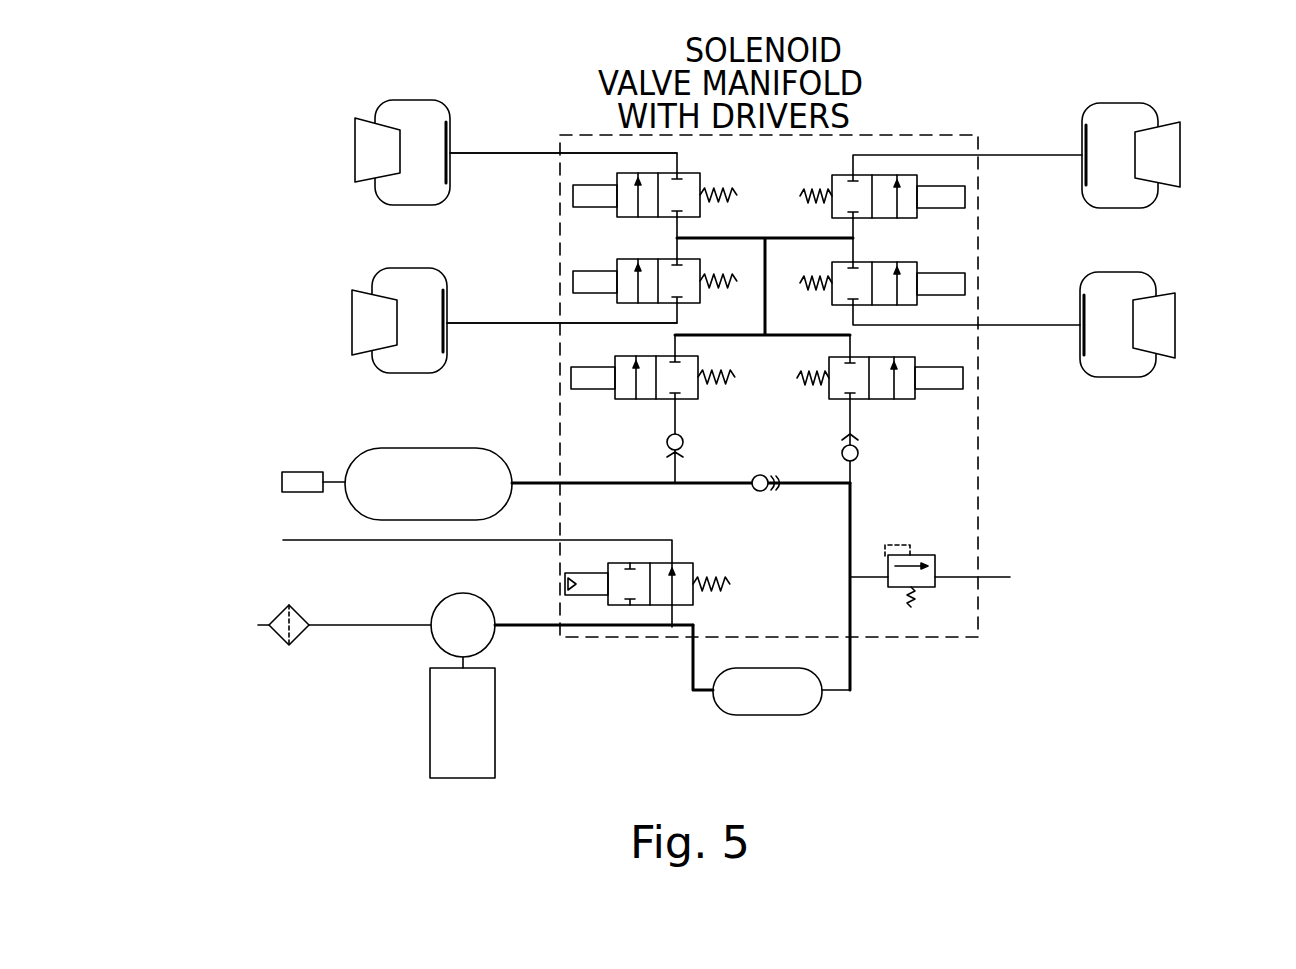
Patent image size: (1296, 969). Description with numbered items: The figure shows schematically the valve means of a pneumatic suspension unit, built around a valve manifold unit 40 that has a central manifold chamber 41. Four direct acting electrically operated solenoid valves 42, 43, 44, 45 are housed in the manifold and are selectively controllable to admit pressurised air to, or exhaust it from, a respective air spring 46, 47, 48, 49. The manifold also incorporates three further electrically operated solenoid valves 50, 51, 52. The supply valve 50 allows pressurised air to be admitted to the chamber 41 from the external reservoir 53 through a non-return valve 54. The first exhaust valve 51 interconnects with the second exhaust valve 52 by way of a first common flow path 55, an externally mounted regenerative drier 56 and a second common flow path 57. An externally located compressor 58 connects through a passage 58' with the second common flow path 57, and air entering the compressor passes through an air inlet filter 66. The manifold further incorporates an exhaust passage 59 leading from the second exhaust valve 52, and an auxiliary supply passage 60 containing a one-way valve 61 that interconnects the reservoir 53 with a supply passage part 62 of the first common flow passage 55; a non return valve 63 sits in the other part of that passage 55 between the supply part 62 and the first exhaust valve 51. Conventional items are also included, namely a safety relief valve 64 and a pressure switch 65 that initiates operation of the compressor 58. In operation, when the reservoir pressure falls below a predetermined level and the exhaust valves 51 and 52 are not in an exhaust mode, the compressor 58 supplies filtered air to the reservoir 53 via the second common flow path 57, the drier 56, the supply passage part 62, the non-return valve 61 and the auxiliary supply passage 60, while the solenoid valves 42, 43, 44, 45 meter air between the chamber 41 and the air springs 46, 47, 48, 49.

The valve manifold unit 40 is at (936, 133).
The chamber 41 is at (767, 323).
The solenoid valve 42 is at (575, 186).
The solenoid valve 43 is at (963, 272).
The solenoid valve 44 is at (575, 270).
The solenoid valve 45 is at (965, 191).
The air spring 46 is at (355, 147).
The air spring 47 is at (352, 322).
The air spring 48 is at (1168, 330).
The air spring 49 is at (1183, 150).
The supply valve 50 is at (570, 383).
The first exhaust valve 51 is at (964, 383).
The second exhaust valve 52 is at (565, 578).
The reservoir 53 is at (388, 500).
The non-return valve 54 is at (665, 440).
The first common flow path 55 is at (855, 475).
The regenerative drier 56 is at (812, 705).
The second common flow path 57 is at (688, 682).
The compressor 58 is at (432, 701).
The passage 58' is at (594, 660).
The exhaust passage 59 is at (600, 540).
The auxiliary supply passage 60 is at (700, 483).
The one-way valve 61 is at (762, 476).
The supply passage part 62 is at (852, 503).
The non return valve 63 is at (858, 451).
The safety relief valve 64 is at (935, 580).
The pressure switch 65 is at (282, 483).
The air inlet filter 66 is at (285, 640).